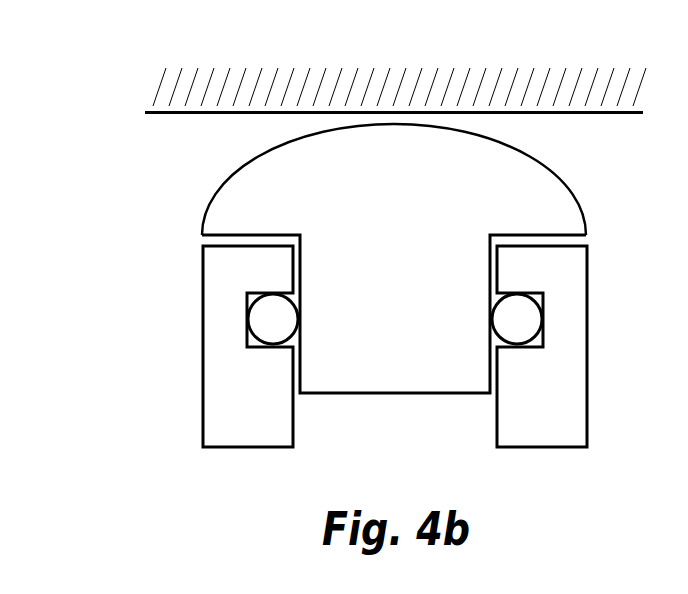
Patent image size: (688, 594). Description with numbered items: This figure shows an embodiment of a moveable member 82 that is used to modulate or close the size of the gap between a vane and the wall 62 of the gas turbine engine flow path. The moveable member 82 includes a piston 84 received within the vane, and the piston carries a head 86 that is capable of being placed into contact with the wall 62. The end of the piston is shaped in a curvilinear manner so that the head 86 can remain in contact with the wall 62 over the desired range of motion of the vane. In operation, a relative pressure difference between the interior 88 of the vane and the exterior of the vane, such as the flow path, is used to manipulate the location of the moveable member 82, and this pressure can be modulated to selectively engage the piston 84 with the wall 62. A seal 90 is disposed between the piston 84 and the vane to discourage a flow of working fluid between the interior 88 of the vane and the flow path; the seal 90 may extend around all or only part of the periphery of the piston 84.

The wall 62 is at (193, 82).
The moveable member 82 is at (335, 262).
The piston 84 is at (350, 318).
The head 86 is at (491, 188).
The interior 88 is at (363, 420).
The seal 90 is at (520, 315).